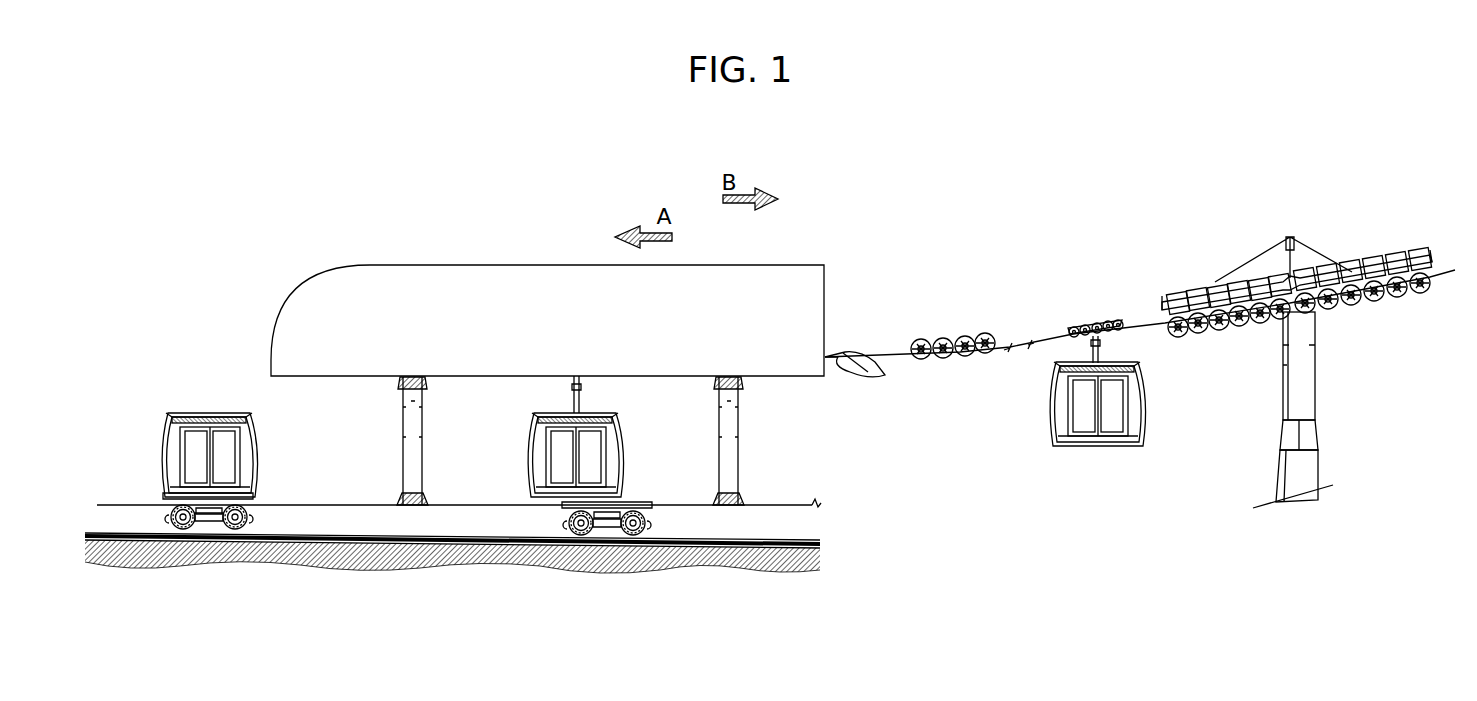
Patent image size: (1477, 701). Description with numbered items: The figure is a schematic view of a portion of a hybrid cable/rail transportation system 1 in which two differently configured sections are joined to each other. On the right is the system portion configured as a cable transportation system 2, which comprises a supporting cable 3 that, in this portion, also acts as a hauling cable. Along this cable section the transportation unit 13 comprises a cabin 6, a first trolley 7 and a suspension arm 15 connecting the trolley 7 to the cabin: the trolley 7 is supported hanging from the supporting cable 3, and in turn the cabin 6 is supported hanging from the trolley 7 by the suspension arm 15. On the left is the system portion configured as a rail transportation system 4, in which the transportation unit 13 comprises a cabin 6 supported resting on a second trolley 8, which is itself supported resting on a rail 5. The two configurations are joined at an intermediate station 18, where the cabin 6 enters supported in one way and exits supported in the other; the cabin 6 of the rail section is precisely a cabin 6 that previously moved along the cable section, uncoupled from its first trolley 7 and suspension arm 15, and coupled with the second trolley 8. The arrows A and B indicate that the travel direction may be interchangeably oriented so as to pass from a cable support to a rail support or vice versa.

The hybrid cable/rail transportation system 1 is at (846, 230).
The cable transportation system portion 2 is at (1052, 300).
The supporting cable 3 is at (1046, 338).
The rail transportation system portion 4 is at (103, 478).
The rail 5 is at (123, 528).
The cabin 6 is at (165, 426).
The first trolley 7 is at (1089, 322).
The second trolley 8 is at (204, 528).
The transportation unit 13 is at (164, 379).
The suspension arm 15 is at (575, 393).
The intermediate station 18 is at (513, 273).